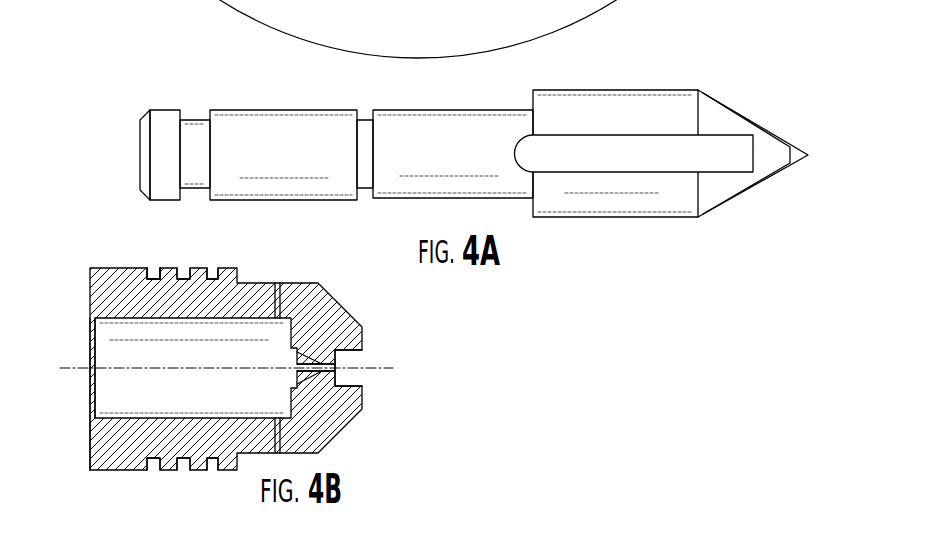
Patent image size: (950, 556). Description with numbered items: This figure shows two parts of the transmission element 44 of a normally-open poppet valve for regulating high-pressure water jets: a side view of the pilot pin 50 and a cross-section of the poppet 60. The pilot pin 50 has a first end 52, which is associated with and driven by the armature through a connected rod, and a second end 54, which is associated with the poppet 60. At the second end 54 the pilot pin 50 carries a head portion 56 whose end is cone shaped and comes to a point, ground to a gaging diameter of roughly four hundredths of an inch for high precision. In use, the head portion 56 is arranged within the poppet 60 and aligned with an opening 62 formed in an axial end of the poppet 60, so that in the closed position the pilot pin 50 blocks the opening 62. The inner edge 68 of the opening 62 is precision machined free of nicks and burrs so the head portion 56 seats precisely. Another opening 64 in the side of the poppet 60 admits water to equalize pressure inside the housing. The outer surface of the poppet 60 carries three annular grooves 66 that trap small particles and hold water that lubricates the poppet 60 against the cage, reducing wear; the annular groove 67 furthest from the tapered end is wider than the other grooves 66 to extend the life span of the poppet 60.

In FIG. 4A, the transmission element 44 is at (743, 235).
In FIG. 4A, the pilot pin 50 is at (613, 78).
In FIG. 4A, the first end 52 is at (168, 110).
In FIG. 4A, the second end 54 is at (752, 118).
In FIG. 4A, the head portion 56 is at (633, 185).
In FIG. 4B, the poppet 60 is at (269, 263).
In FIG. 4B, the opening 62 is at (306, 369).
In FIG. 4B, the opening 64 is at (278, 283).
In FIG. 4B, the annular grooves 66 is at (156, 272).
In FIG. 4B, the annular groove 67 is at (151, 273).
In FIG. 4B, the inner edge 68 is at (115, 318).